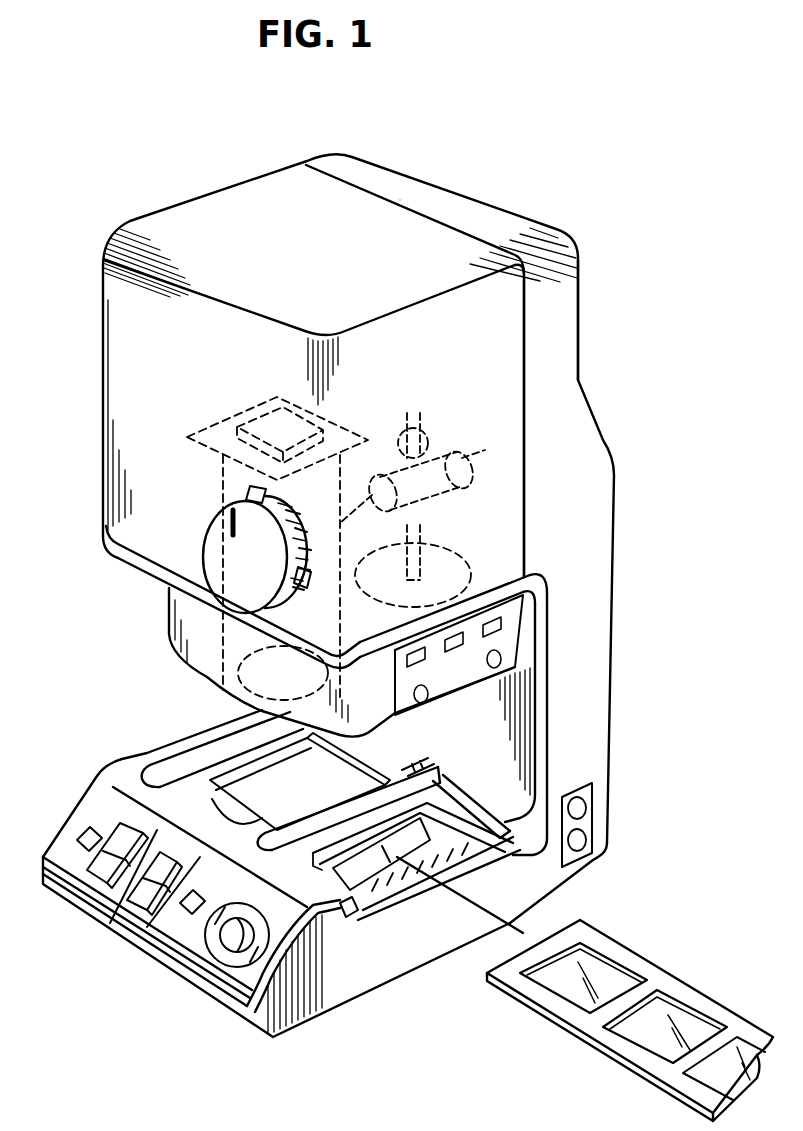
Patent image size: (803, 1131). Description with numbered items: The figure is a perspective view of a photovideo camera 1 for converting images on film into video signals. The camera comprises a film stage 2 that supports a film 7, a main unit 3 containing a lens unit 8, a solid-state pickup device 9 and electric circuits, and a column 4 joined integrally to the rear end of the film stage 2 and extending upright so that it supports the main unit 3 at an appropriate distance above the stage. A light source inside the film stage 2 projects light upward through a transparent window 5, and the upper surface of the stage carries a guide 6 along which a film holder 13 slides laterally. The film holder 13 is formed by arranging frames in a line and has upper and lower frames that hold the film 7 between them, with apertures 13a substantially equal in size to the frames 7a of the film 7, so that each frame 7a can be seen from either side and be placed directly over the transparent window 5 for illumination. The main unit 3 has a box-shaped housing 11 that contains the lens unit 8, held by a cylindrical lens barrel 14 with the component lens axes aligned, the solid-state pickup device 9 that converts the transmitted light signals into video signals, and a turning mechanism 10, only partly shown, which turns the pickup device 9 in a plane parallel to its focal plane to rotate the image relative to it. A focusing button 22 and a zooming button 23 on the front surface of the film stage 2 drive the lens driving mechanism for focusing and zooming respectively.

The photovideo camera 1 is at (598, 380).
The film stage 2 is at (410, 935).
The main unit 3 is at (498, 437).
The column 4 is at (583, 737).
The transparent window 5 is at (275, 773).
The guide 6 is at (357, 897).
The film 7 is at (600, 973).
The frames 7a is at (570, 987).
The lens unit 8 is at (207, 673).
The solid-state pickup device 9 is at (233, 412).
The turning mechanism 10 is at (457, 520).
The box-shaped housing 11 is at (563, 305).
The film holder 13 is at (653, 963).
The apertures 13a is at (700, 1003).
The cylindrical lens barrel 14 is at (223, 480).
The focusing button 22 is at (87, 863).
The zooming button 23 is at (108, 920).